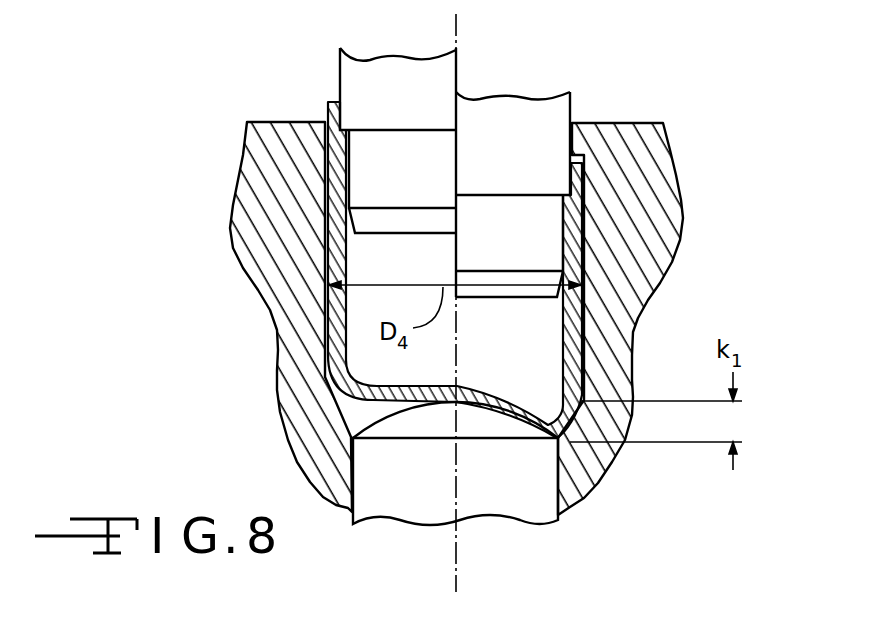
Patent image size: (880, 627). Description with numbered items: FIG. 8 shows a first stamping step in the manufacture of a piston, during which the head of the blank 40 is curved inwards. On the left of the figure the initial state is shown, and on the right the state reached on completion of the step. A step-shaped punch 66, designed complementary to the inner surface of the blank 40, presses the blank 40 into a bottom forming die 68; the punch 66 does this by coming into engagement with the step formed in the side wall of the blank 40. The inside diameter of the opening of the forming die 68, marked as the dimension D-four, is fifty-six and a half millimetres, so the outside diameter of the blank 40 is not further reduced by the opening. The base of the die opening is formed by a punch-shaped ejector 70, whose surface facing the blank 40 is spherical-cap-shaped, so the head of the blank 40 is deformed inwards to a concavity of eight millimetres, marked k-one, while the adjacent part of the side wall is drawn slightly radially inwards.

The blank 40 is at (572, 213).
The step-shaped punch 66 is at (512, 150).
The bottom forming die 68 is at (617, 463).
The punch-shaped ejector 70 is at (480, 490).